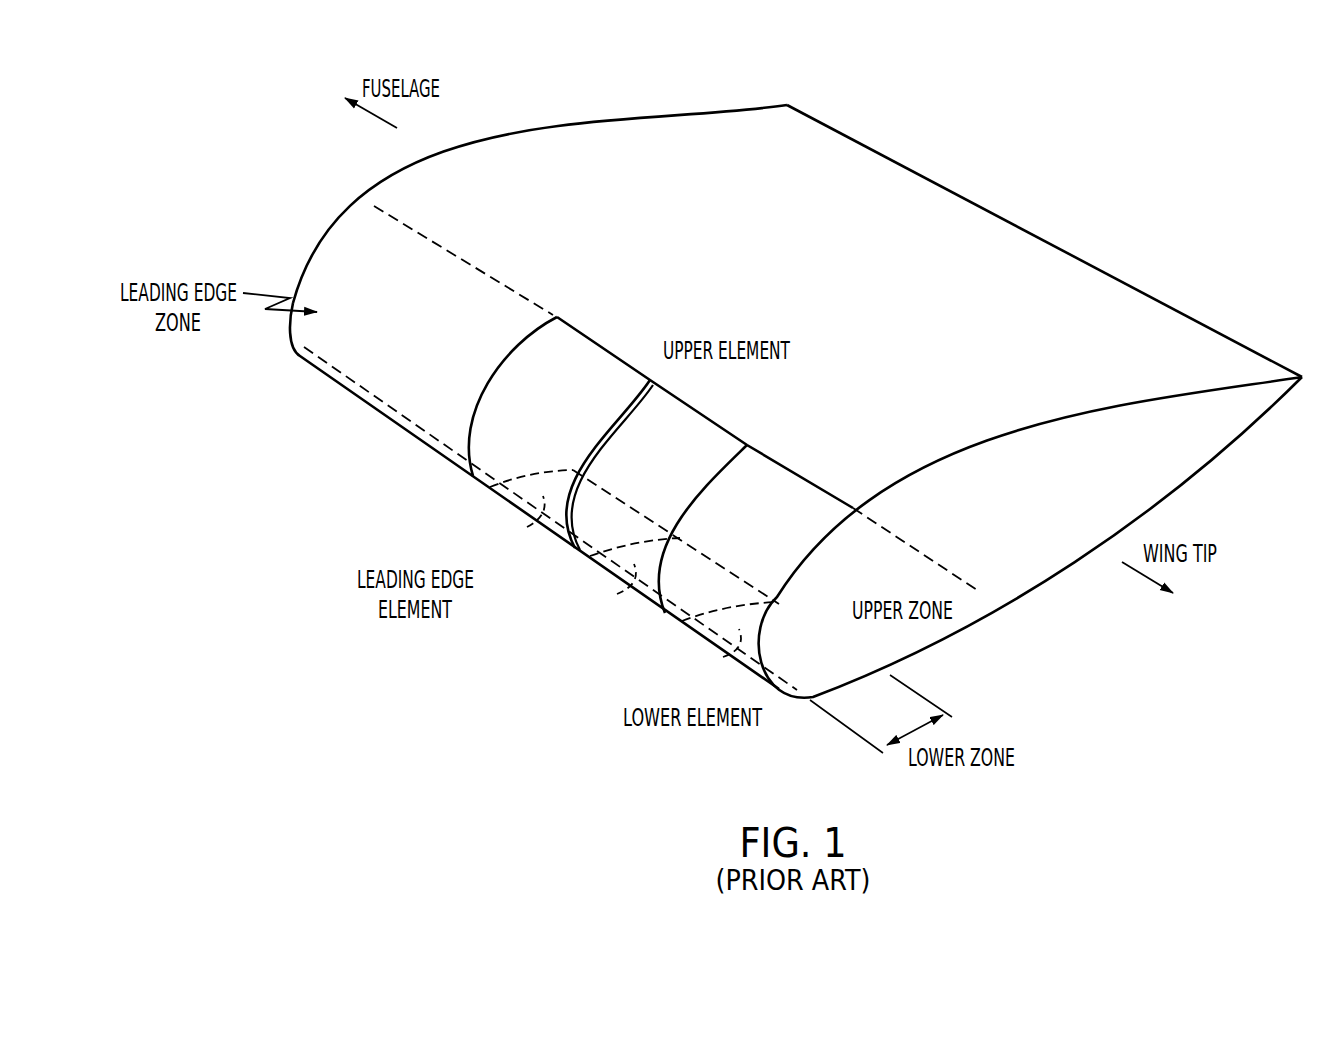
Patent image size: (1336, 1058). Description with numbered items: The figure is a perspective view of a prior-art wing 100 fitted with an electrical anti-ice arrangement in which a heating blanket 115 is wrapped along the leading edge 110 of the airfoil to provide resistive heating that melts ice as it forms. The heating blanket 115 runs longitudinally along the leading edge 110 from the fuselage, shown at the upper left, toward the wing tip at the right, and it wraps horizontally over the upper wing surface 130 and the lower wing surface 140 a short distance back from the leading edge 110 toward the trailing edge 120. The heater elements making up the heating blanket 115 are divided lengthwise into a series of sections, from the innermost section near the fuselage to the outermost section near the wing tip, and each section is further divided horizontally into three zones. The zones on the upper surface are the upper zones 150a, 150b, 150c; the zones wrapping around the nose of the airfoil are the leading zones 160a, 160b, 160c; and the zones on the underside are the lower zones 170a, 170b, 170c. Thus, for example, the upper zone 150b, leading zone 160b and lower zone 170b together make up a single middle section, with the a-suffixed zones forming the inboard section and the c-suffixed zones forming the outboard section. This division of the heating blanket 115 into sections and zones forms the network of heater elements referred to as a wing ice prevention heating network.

The wing 100 is at (1143, 213).
The leading edge 110 is at (407, 433).
The heating blanket 115 is at (747, 425).
The trailing edge 120 is at (1168, 306).
The upper wing surface 130 is at (543, 231).
The lower wing surface 140 is at (1056, 526).
The upper zone 150a is at (588, 406).
The upper zone 150b is at (693, 473).
The upper zone 150c is at (797, 536).
The leading zone 160a is at (492, 467).
The leading zone 160b is at (594, 536).
The leading zone 160c is at (702, 613).
The lower zone 170a is at (530, 522).
The lower zone 170b is at (623, 588).
The lower zone 170c is at (725, 661).